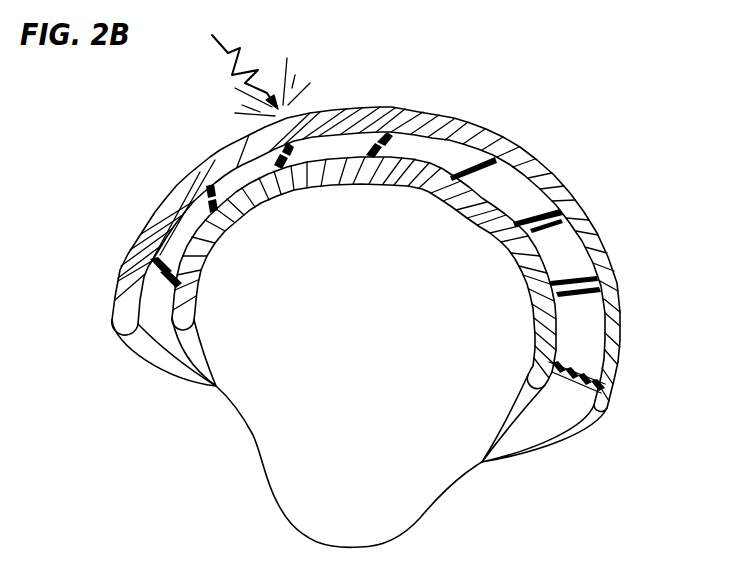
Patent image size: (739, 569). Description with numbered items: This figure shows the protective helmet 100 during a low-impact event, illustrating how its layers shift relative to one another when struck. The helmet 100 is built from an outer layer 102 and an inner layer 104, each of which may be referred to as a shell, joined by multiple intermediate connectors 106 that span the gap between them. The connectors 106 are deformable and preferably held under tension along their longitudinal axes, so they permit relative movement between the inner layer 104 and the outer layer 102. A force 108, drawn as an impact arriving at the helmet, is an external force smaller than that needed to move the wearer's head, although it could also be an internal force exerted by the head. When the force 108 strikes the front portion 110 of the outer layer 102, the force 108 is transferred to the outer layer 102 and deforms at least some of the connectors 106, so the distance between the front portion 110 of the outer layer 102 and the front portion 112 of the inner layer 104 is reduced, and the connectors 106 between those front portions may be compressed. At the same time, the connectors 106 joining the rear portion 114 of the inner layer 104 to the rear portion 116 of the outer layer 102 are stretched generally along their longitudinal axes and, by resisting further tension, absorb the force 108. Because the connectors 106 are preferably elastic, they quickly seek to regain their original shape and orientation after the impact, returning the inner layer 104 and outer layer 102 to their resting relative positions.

The protective helmet 100 is at (132, 177).
The outer layer 102 is at (153, 210).
The inner layer 104 is at (223, 233).
The intermediate connectors 106 is at (212, 187).
The force 108 is at (232, 68).
The front portion of outer layer 110 is at (131, 358).
The front portion of inner layer 112 is at (216, 330).
The rear portion of inner layer 114 is at (537, 305).
The rear portion of outer layer 116 is at (615, 324).